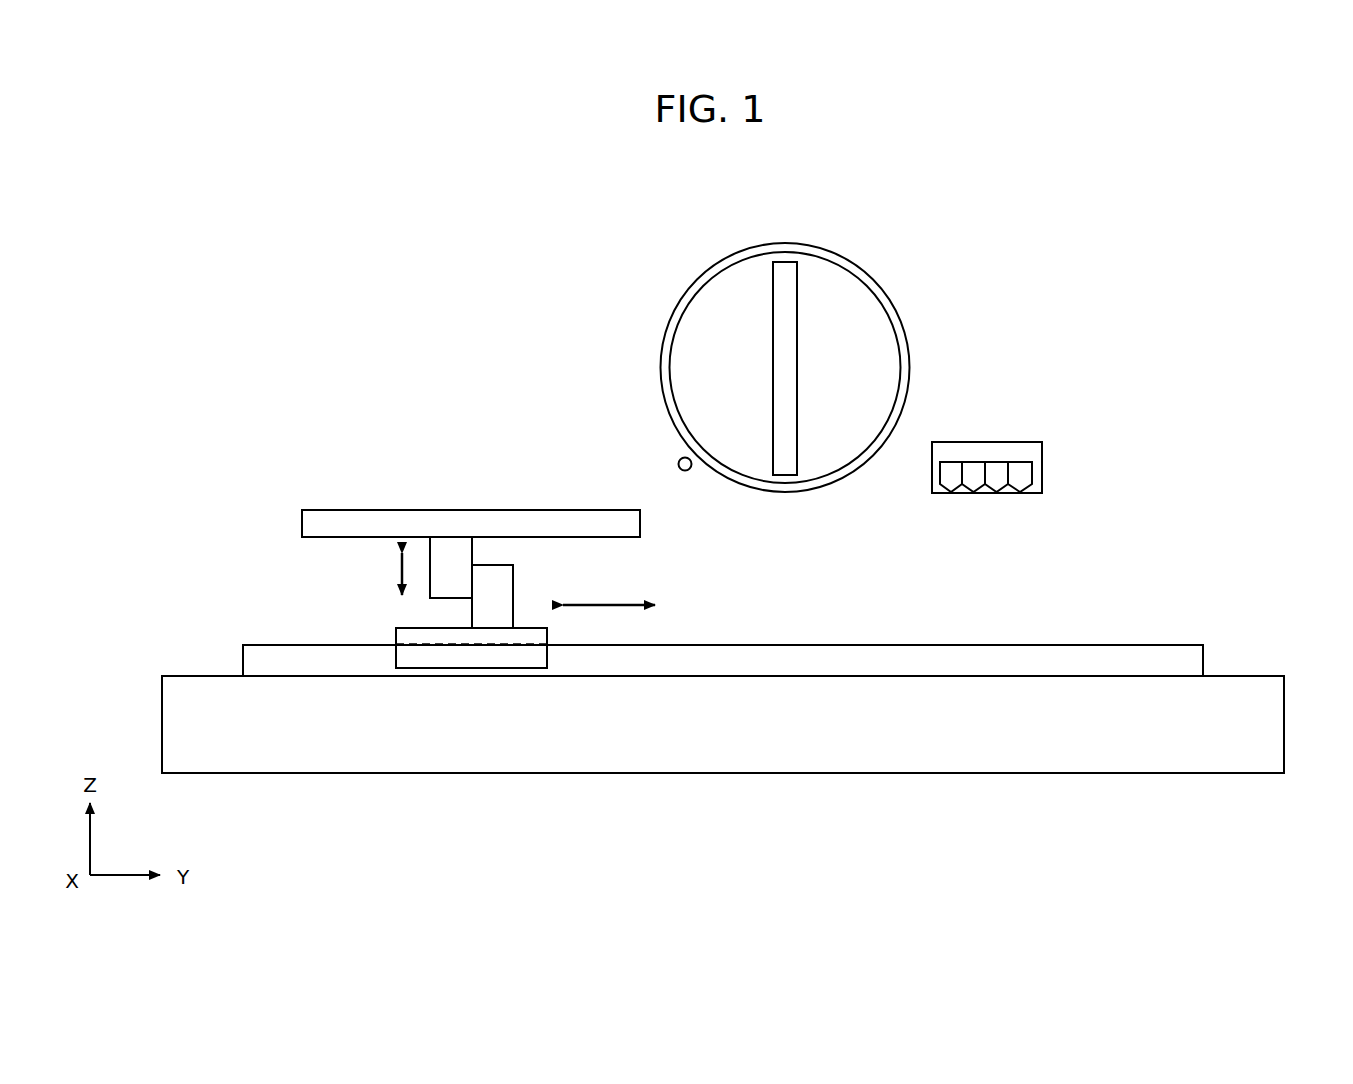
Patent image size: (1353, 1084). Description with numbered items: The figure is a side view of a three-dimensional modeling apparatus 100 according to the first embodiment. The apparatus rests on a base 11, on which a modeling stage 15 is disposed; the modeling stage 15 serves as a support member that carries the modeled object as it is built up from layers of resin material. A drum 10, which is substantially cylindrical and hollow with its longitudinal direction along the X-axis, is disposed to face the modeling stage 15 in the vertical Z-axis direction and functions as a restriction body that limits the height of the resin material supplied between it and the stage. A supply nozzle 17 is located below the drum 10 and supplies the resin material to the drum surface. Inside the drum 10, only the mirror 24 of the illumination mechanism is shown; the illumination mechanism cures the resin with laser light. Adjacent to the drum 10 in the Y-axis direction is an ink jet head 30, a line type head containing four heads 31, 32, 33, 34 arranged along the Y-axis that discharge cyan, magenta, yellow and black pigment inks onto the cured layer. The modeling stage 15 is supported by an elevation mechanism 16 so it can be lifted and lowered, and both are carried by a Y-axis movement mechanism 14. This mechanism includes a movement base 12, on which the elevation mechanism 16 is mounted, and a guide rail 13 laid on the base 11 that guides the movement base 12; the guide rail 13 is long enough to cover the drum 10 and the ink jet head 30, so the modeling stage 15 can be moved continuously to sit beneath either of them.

The 3D modeling apparatus 100 is at (597, 250).
The drum 10 is at (874, 285).
The mirror 24 is at (785, 323).
The supply nozzle 17 is at (678, 464).
The ink jet head 30 is at (1016, 445).
The head 31 is at (952, 462).
The head 32 is at (974, 462).
The head 33 is at (997, 462).
The head 34 is at (1020, 462).
The modeling stage 15 is at (308, 522).
The elevation mechanism 16 is at (508, 582).
The Y-axis movement mechanism 14 is at (666, 633).
The movement base 12 is at (404, 636).
The guide rail 13 is at (689, 657).
The base 11 is at (1268, 727).